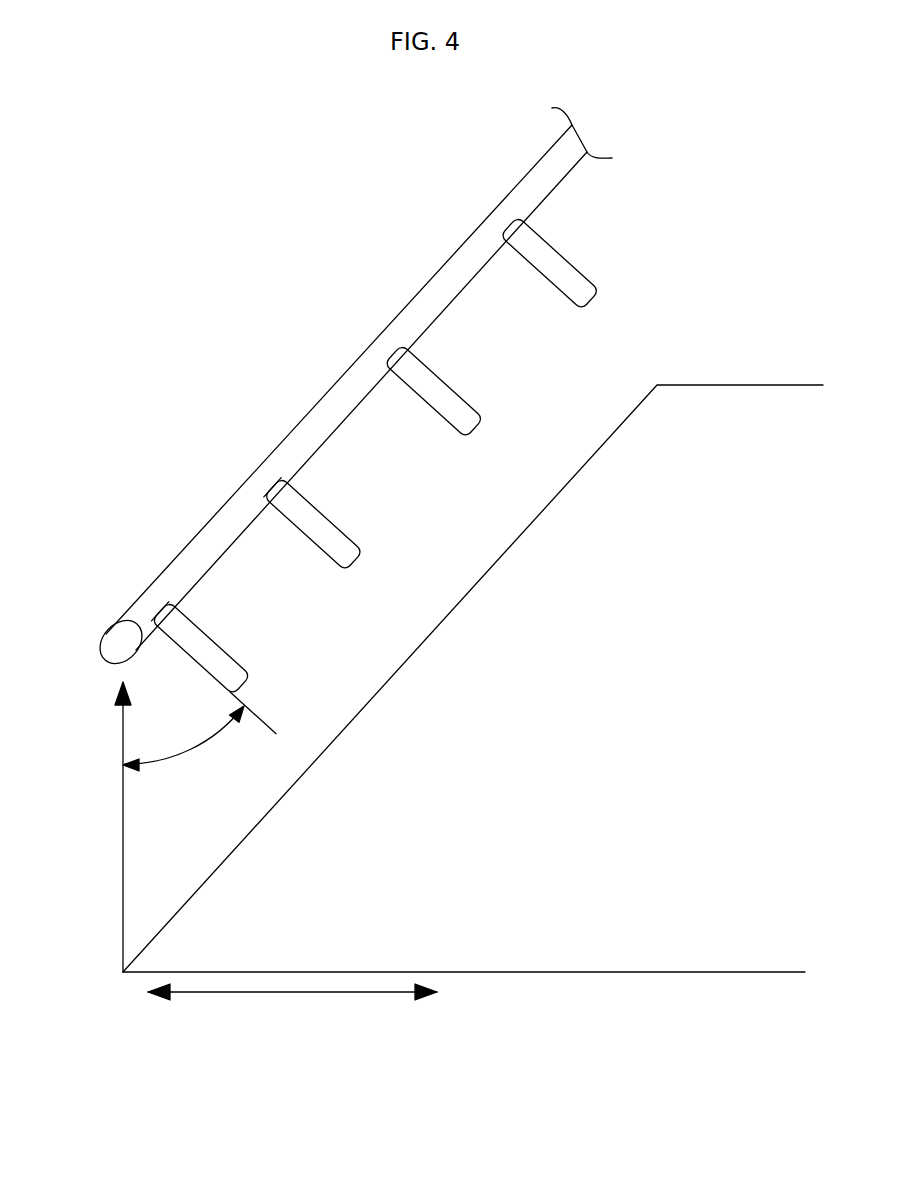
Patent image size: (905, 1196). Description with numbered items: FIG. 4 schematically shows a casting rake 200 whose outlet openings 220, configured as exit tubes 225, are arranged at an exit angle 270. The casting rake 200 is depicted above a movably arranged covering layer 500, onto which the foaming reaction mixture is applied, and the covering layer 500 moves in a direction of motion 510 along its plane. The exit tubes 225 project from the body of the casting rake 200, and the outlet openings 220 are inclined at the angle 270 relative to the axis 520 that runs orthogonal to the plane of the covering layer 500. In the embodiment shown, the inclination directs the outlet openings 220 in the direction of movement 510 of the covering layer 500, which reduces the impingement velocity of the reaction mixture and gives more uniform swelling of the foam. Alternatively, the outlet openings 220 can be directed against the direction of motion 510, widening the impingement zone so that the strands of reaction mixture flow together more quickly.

The casting rake 200 is at (427, 237).
The outlet openings 220 is at (280, 482).
The exit tubes 225 is at (579, 303).
The exit angle 270 is at (152, 767).
The covering layer 500 is at (605, 973).
The direction of motion 510 is at (303, 1005).
The axis 520 is at (122, 835).